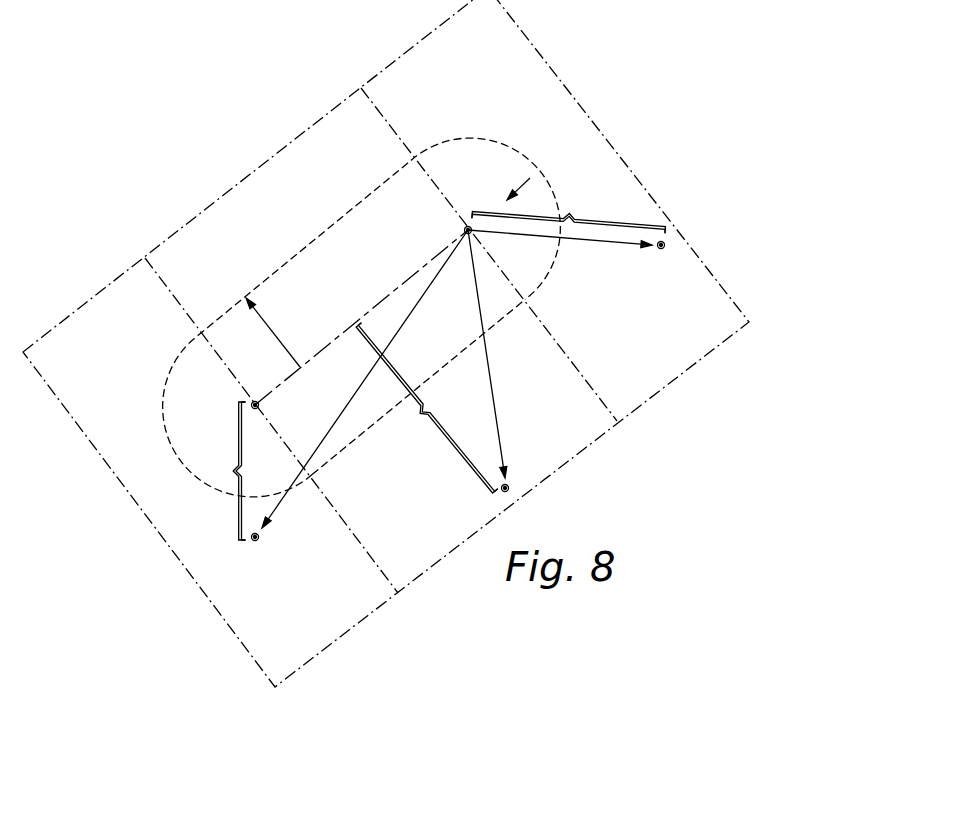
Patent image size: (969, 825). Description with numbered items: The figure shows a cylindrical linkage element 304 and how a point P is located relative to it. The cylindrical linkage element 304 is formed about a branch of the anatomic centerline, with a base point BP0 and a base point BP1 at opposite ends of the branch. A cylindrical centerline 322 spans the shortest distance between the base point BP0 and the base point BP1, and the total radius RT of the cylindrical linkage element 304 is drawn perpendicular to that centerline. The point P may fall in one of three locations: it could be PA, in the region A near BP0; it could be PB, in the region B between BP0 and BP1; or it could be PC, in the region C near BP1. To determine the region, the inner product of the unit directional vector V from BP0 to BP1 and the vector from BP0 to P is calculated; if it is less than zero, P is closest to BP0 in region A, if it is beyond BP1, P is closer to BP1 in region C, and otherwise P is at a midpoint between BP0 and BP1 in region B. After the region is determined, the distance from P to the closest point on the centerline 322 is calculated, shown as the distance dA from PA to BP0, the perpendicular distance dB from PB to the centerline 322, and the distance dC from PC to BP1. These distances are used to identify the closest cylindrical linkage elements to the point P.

The cylindrical linkage element 304 is at (386, 343).
The cylindrical centerline 322 is at (281, 385).
The region A is at (442, 57).
The region B is at (268, 188).
The region C is at (95, 323).
The total radius RT is at (262, 313).
The unit directional vector V is at (518, 181).
The base point BP0 is at (478, 210).
The base point BP1 is at (229, 406).
The point PA is at (567, 254).
The point PB is at (487, 372).
The point PC is at (356, 404).
The distance from PA to centerline dA is at (569, 213).
The distance from PB to centerline dB is at (427, 408).
The distance from PC to centerline dC is at (225, 471).